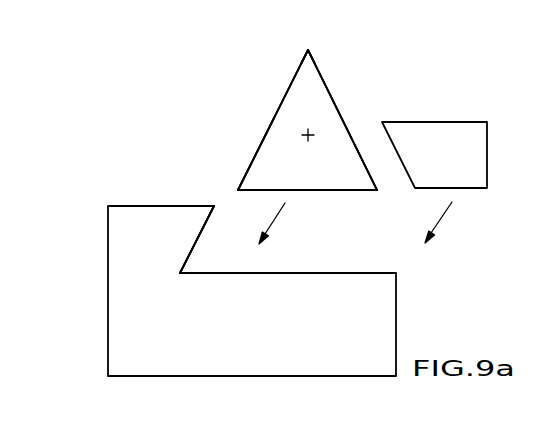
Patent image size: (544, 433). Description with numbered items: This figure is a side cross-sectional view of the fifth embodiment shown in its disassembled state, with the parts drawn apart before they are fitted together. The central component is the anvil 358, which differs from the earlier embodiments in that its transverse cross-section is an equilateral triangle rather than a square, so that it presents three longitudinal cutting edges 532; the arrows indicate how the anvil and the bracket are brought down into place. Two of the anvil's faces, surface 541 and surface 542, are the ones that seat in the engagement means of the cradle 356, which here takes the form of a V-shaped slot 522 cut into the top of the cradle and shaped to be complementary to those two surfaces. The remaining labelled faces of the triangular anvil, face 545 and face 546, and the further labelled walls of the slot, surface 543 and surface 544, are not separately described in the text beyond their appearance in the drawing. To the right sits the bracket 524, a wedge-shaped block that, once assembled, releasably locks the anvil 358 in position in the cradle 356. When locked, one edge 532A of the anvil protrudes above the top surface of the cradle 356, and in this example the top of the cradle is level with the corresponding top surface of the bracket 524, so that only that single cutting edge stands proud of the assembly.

The anvil 358 is at (305, 88).
The edge 532A is at (308, 50).
The first prism face 545 is at (274, 118).
The surface 541 is at (254, 158).
The second prism face 546 is at (343, 115).
The surface 542 is at (307, 190).
The bracket 524 is at (437, 135).
The longitudinal cutting edges 532 is at (372, 185).
The cradle 356 is at (137, 353).
The V-shaped slot 522 is at (208, 248).
The inclined surface 543 is at (198, 238).
The step surface 544 is at (250, 275).